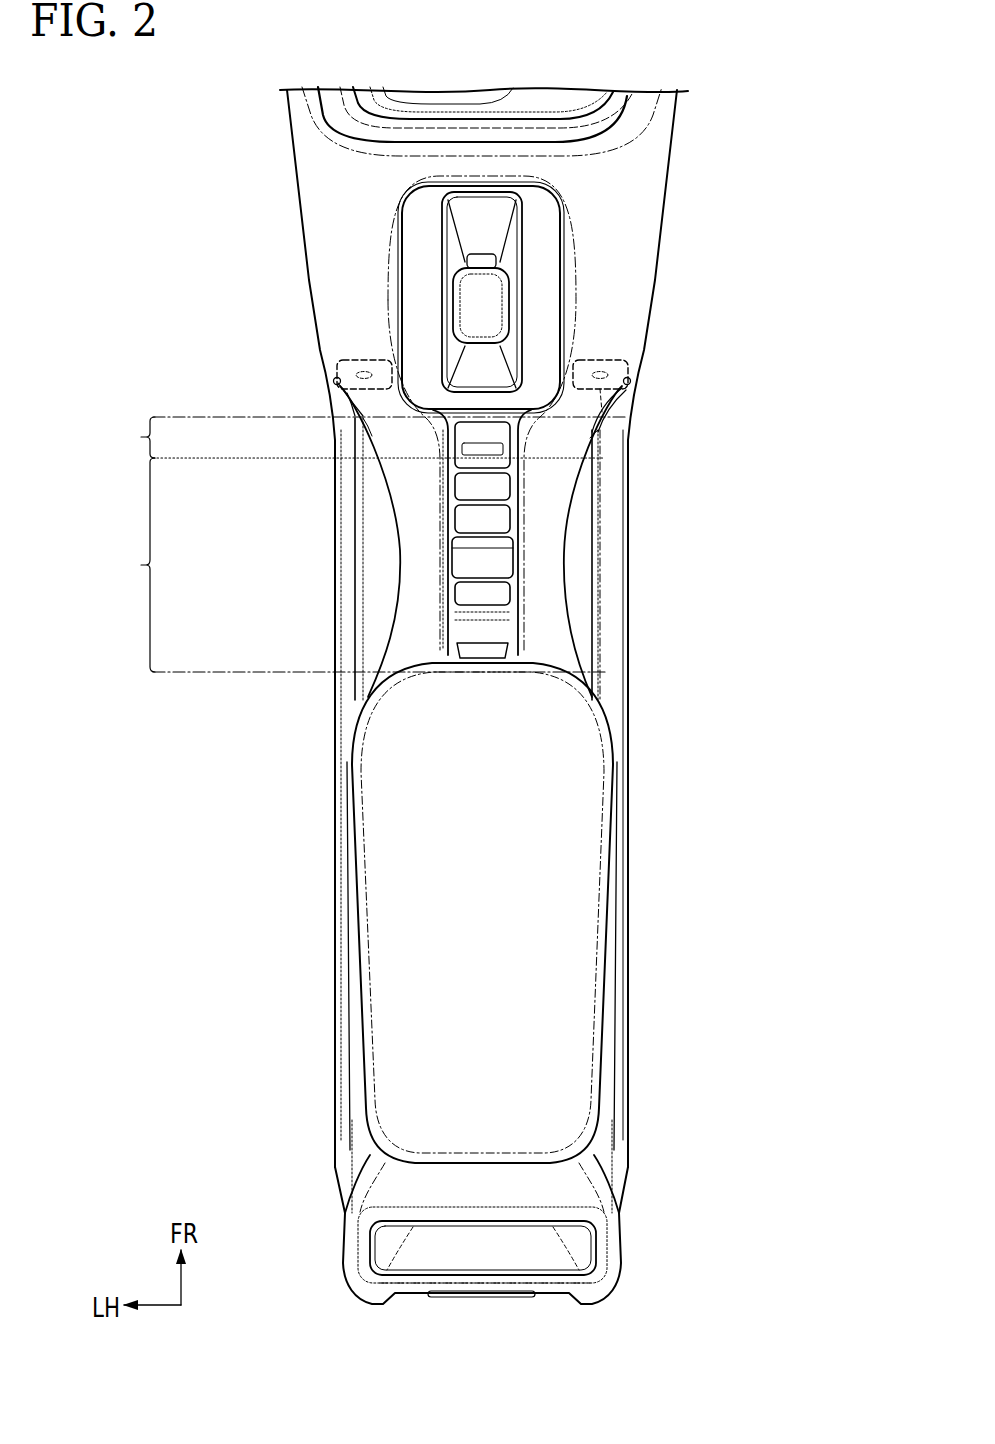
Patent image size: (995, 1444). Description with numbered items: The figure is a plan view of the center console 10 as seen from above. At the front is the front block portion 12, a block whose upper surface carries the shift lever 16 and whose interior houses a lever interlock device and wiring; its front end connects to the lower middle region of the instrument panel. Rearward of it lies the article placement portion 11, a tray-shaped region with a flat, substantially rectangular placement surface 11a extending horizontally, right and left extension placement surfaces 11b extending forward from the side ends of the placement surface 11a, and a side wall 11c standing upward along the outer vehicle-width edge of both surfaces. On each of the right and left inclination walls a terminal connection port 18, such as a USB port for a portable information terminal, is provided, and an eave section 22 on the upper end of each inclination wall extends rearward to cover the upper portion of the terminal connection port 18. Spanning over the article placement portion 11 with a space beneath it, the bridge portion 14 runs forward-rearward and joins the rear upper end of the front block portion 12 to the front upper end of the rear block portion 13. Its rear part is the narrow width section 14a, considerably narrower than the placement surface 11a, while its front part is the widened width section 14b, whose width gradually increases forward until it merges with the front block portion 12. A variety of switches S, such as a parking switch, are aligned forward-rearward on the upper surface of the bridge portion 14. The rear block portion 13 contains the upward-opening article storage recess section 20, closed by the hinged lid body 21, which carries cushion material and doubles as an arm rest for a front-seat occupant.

The center console 10 is at (693, 313).
The front block portion 12 is at (660, 200).
The rear block portion 13 is at (628, 1082).
The bridge portion 14 is at (566, 538).
The narrow width section 14a is at (125, 565).
The widened width section 14b is at (125, 437).
The article placement portion 11 is at (350, 548).
The placement surface 11a is at (385, 507).
The extension placement surface 11b is at (372, 436).
The side wall 11c is at (365, 605).
The shift lever 16 is at (457, 280).
The terminal connection port 18 is at (347, 393).
The article storage recess section 20 is at (628, 1000).
The lid body 21 is at (570, 912).
The eave section 22 is at (330, 407).
The switches S is at (466, 593).